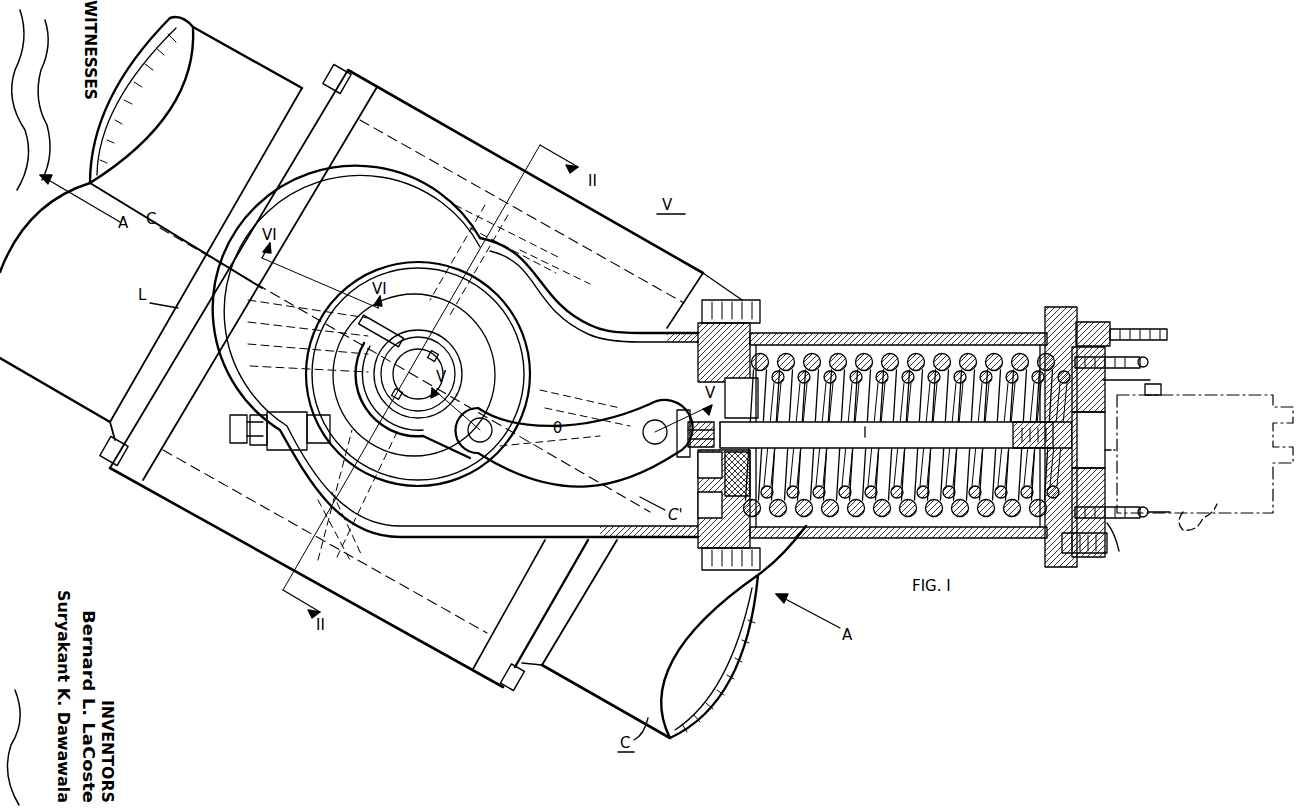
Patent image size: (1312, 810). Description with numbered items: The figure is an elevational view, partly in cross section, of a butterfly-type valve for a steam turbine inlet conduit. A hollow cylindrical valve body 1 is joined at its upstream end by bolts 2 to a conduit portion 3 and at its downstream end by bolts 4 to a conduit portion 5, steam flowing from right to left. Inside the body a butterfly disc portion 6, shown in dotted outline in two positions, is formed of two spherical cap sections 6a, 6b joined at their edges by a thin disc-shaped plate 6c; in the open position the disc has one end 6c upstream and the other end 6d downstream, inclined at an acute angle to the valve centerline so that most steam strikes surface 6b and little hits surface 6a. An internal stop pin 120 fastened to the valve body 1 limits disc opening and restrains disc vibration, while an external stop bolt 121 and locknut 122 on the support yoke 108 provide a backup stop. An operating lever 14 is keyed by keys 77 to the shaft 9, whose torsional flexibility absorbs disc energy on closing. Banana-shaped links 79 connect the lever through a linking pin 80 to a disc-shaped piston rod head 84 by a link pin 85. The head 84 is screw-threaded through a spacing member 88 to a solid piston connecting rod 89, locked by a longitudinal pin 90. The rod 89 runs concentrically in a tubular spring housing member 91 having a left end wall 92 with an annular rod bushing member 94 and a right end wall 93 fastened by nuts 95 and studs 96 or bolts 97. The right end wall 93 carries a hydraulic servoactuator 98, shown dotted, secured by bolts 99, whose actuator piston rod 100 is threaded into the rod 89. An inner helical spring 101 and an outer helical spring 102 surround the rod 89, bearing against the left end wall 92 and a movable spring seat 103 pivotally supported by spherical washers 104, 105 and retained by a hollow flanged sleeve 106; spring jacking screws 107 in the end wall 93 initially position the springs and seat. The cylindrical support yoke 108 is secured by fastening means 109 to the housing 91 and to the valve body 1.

The valve body 1 is at (427, 634).
The bolts 2 is at (330, 70).
The portion of the conduit 3 is at (44, 380).
The bolts 4 is at (534, 682).
The portion of the conduit 5 is at (598, 688).
The butterfly disc portion 6 is at (319, 522).
The spherical cap section 6a is at (496, 218).
The spherical cap section 6b is at (528, 240).
The disc-shaped plate 6c is at (528, 222).
The end of disc 6d is at (246, 324).
The shaft 9 is at (416, 410).
The operating lever 14 is at (496, 393).
The keys 77 is at (418, 374).
The banana-shaped links 79 is at (604, 476).
The linking pin 80 is at (490, 436).
The piston rod head 84 is at (678, 458).
The link pin 85 is at (646, 434).
The spacing member 88 is at (698, 454).
The piston connecting rod 89 is at (737, 474).
The pin 90 is at (710, 465).
The spring housing member 91 is at (908, 542).
The left end wall 92 is at (724, 435).
The right end wall 93 is at (1123, 546).
The rod bushing member 94 is at (741, 398).
The nuts 95 is at (1104, 324).
The studs 96 is at (1155, 326).
The bolts 97 is at (1112, 560).
The hydraulic servoactuator 98 is at (1218, 502).
The bolts 99 is at (1160, 390).
The actuator piston rod 100 is at (1096, 442).
The inner helical spring 101 is at (815, 382).
The outer helical spring 102 is at (868, 382).
The movable spring seat 103 is at (1050, 386).
The spherical washer 104 is at (1014, 440).
The spherical washer 105 is at (1046, 538).
The hollow flanged sleeve 106 is at (1050, 490).
The spring jacking screws 107 is at (1148, 363).
The support yoke 108 is at (562, 310).
The fastening means 109 is at (752, 312).
The internal stop pin 120 is at (338, 284).
The external stop bolt 121 is at (240, 442).
The locknut 122 is at (258, 445).